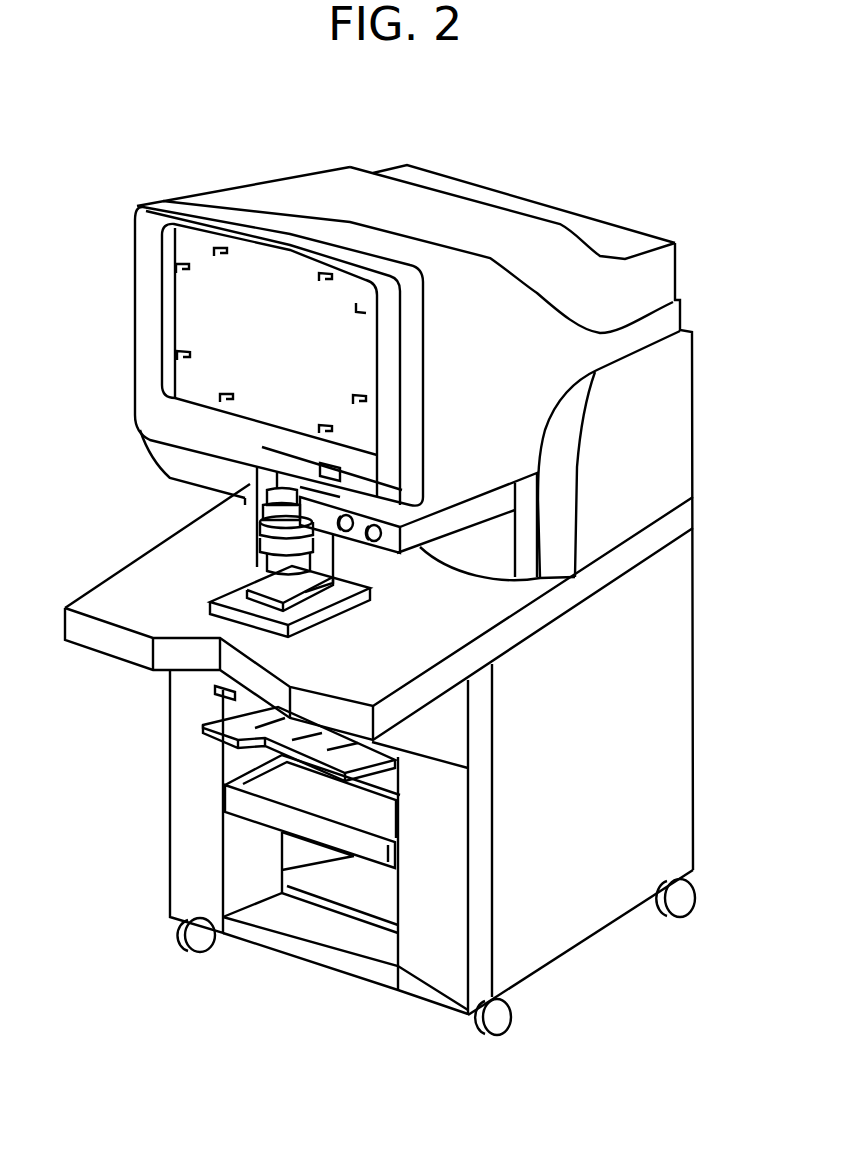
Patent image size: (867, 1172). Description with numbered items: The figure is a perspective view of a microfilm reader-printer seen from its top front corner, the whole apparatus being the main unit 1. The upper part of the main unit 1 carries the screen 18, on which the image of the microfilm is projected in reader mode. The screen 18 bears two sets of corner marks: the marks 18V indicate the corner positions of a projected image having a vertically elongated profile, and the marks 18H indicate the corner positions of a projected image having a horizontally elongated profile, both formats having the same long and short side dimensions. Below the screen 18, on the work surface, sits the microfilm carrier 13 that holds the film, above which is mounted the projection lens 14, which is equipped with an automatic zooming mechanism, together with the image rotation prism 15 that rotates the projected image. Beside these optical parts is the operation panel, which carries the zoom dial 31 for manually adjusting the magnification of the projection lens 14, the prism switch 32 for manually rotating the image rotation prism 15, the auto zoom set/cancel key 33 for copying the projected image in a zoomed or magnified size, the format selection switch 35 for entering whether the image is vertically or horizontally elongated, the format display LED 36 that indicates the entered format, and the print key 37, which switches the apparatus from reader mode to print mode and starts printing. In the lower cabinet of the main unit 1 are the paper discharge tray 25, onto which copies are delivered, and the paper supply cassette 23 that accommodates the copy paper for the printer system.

The main unit 1 is at (693, 473).
The microfilm carrier 13 is at (330, 620).
The projection lens 14 is at (275, 566).
The image rotation prism 15 is at (263, 501).
The screen 18 is at (263, 273).
The marks indicative of the corner positions of a vertically elongated image 18V is at (215, 251).
The marks indicative of the corner positions of a horizontally elongated image 18H is at (180, 353).
The paper supply cassette 23 is at (237, 797).
The paper discharge tray 25 is at (222, 733).
The zoom dial 31 is at (378, 542).
The prism switch 32 is at (372, 517).
The auto zoom set/cancel key 33 is at (192, 458).
The format selection switch 35 is at (340, 492).
The format display LED 36 is at (335, 466).
The print key 37 is at (355, 511).